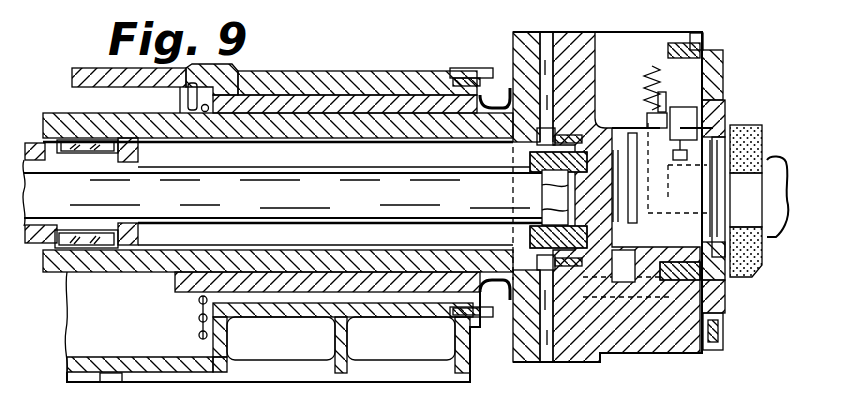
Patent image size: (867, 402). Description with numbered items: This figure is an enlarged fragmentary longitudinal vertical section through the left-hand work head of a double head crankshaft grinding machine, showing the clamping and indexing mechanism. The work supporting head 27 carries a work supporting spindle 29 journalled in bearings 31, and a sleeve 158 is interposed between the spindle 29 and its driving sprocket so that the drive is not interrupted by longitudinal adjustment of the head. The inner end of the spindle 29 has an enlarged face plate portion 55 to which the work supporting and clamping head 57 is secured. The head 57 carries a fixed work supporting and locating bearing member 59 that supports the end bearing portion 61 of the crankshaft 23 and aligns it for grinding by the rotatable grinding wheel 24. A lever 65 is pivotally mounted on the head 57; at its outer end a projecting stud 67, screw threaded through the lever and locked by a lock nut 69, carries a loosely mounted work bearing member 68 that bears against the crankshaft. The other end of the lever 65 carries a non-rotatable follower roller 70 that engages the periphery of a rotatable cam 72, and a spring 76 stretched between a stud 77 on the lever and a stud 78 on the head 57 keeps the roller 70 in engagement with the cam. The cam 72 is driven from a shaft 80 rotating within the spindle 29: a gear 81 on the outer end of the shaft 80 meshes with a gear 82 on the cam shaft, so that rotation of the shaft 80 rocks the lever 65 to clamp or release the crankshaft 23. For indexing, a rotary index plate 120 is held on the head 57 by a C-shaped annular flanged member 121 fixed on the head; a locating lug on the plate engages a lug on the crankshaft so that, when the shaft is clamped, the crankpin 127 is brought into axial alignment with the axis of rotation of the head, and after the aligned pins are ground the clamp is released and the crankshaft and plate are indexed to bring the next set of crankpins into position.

The sleeve 158 is at (30, 148).
The bearing 31 is at (300, 108).
The work supporting head 27 is at (362, 85).
The work supporting spindle 29 is at (405, 128).
The face plate portion 55 is at (520, 50).
The stud 78 is at (195, 370).
The spring 76 is at (641, 82).
The lever 65 is at (658, 112).
The stud 77 is at (646, 128).
The follower roller 70 is at (665, 142).
The shaft 80 is at (360, 190).
The gear 82 is at (548, 180).
The gear 81 is at (540, 197).
The cam 72 is at (728, 210).
The work bearing member 68 is at (685, 165).
The end bearing portion 61 is at (716, 212).
The projecting stud 67 is at (705, 80).
The lock nut 69 is at (723, 105).
The rotary index plate 120 is at (726, 113).
The crankpin 127 is at (745, 172).
The crankshaft 23 is at (780, 233).
The grinding wheel 24 is at (750, 280).
The fixed work supporting and locating bearing member 59 is at (713, 250).
The C-shaped annular flanged member 121 is at (707, 47).
The work supporting and clamping head 57 is at (617, 340).